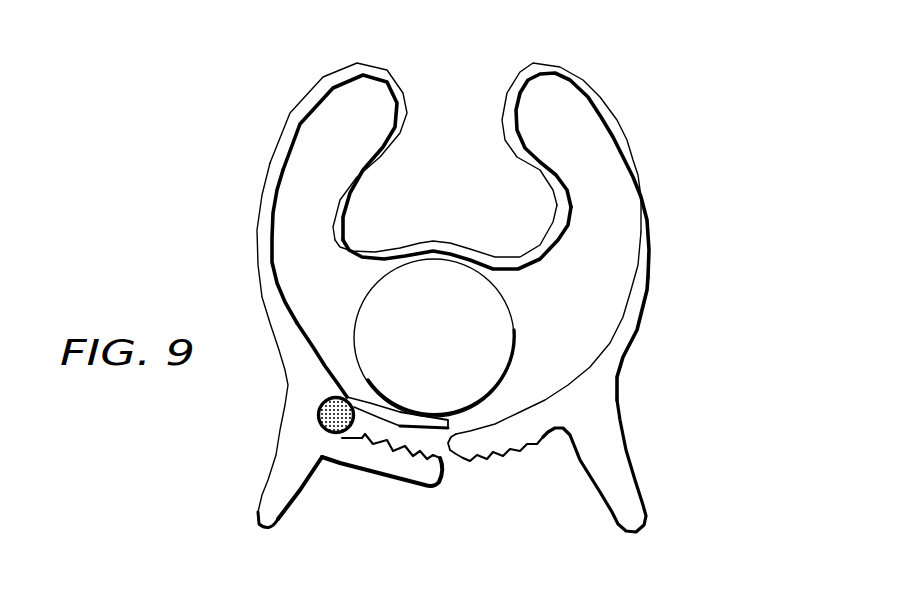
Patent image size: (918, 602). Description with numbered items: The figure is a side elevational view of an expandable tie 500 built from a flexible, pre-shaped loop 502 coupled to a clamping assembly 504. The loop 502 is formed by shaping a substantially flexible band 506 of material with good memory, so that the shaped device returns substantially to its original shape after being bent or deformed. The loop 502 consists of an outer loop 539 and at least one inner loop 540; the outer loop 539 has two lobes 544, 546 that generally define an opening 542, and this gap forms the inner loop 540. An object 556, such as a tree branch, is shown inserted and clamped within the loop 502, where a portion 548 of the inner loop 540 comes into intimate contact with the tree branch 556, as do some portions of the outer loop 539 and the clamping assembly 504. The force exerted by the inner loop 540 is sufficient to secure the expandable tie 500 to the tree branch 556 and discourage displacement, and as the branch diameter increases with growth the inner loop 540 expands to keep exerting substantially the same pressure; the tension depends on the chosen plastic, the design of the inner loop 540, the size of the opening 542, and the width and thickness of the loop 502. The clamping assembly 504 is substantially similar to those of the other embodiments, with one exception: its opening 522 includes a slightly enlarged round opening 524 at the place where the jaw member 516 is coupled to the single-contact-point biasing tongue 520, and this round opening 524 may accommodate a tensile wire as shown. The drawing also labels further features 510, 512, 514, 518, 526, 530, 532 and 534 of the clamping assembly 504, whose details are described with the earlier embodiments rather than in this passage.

The expandable tie 500 is at (459, 301).
The loop 502 is at (471, 256).
The clamping assembly 504 is at (306, 518).
The flexible band 506 is at (258, 192).
The first leg 510 is at (257, 529).
The second jaw member 512 is at (614, 453).
The first leg tip 514 is at (258, 512).
The jaw member 516 is at (398, 483).
The serrations of first jaw 518 is at (386, 453).
The single-contact-point biasing tongue 520 is at (418, 391).
The opening 522 is at (364, 418).
The round opening 524 is at (317, 415).
The pivot ball 526 is at (333, 395).
The second leg tip 530 is at (646, 516).
The second jaw 532 is at (495, 449).
The serrations of second jaw 534 is at (513, 460).
The outer loop 539 is at (674, 231).
The inner loop 540 is at (384, 181).
The opening 542 is at (458, 62).
The lobe 544 is at (365, 62).
The lobe 546 is at (548, 62).
The portion of inner loop 548 is at (446, 239).
The tree branch 556 is at (513, 309).